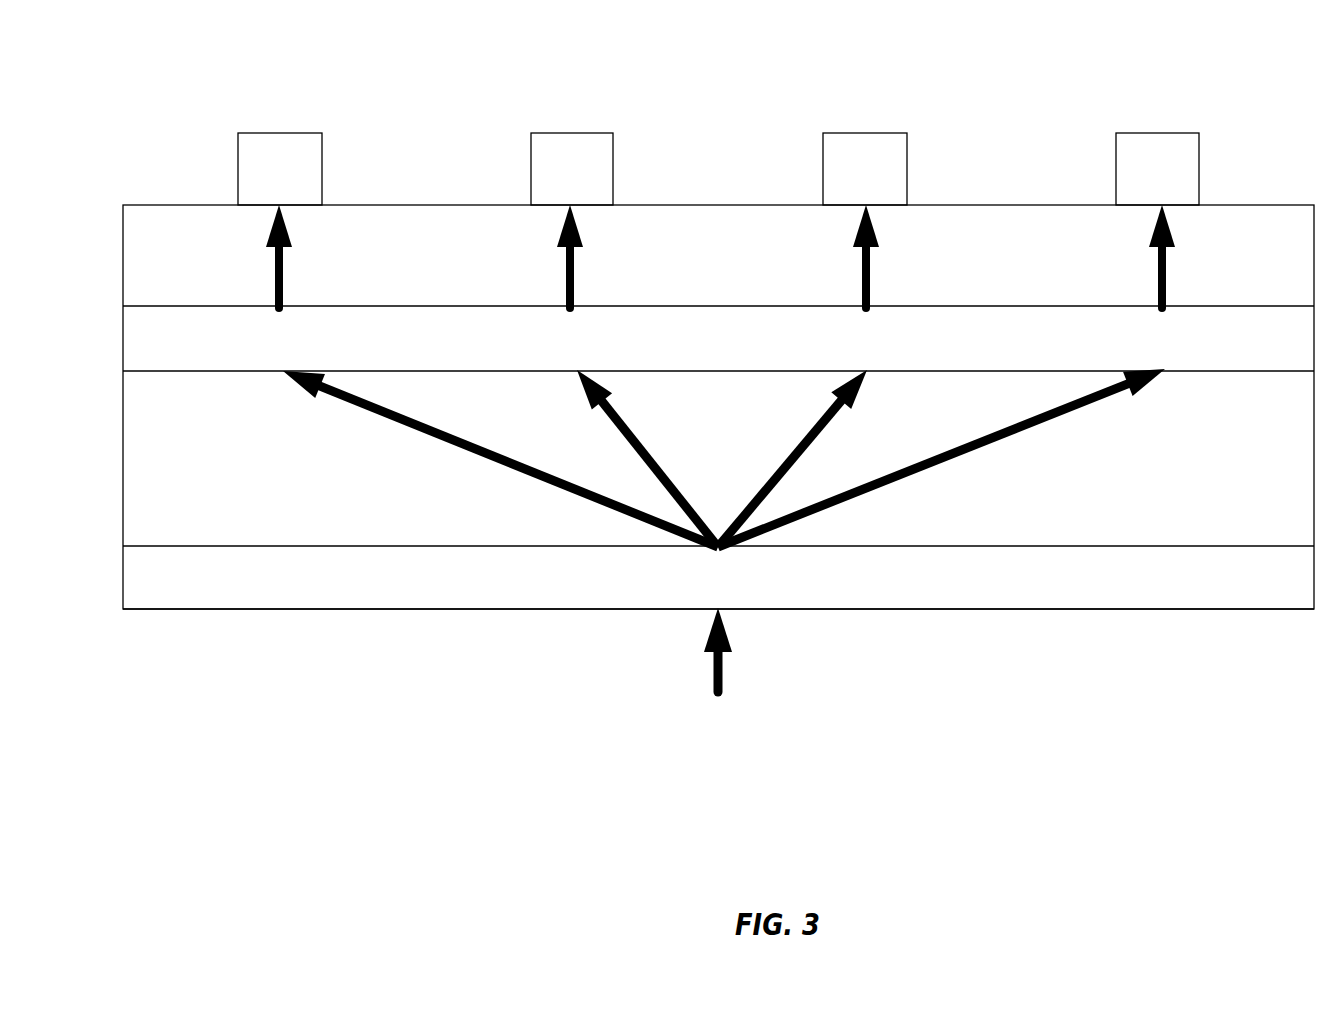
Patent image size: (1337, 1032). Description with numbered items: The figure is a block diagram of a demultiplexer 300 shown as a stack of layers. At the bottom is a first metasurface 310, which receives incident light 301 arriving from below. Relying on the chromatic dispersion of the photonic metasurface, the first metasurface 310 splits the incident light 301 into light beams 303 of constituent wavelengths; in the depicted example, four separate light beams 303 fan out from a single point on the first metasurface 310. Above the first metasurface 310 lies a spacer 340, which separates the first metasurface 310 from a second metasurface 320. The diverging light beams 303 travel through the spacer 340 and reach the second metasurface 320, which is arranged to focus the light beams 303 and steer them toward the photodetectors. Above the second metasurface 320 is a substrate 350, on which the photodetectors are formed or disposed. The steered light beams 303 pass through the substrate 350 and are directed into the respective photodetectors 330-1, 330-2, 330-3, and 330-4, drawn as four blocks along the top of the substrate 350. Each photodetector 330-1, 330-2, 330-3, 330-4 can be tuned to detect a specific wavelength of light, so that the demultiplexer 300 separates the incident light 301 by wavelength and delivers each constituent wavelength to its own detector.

The demultiplexer 300 is at (355, 65).
The incident light 301 is at (677, 670).
The light beams 303 is at (343, 278).
The first metasurface 310 is at (800, 588).
The second metasurface 320 is at (800, 350).
The photodetector 330-1 is at (307, 173).
The photodetector 330-2 is at (600, 173).
The photodetector 330-3 is at (893, 173).
The photodetector 330-4 is at (1185, 173).
The spacer 340 is at (773, 468).
The substrate 350 is at (788, 266).